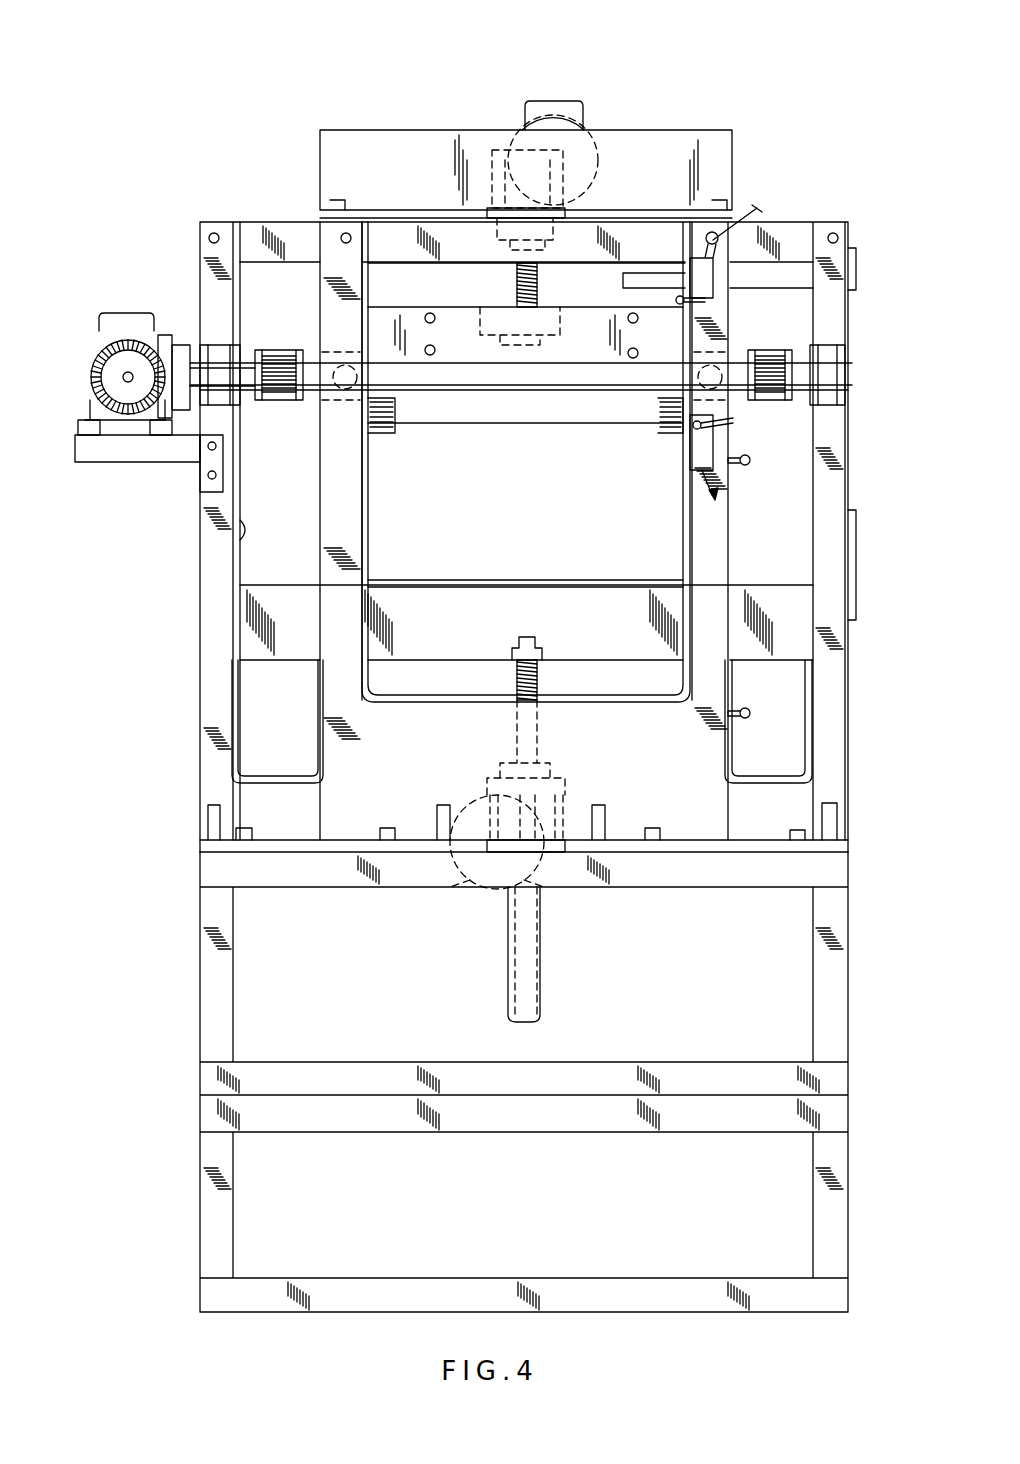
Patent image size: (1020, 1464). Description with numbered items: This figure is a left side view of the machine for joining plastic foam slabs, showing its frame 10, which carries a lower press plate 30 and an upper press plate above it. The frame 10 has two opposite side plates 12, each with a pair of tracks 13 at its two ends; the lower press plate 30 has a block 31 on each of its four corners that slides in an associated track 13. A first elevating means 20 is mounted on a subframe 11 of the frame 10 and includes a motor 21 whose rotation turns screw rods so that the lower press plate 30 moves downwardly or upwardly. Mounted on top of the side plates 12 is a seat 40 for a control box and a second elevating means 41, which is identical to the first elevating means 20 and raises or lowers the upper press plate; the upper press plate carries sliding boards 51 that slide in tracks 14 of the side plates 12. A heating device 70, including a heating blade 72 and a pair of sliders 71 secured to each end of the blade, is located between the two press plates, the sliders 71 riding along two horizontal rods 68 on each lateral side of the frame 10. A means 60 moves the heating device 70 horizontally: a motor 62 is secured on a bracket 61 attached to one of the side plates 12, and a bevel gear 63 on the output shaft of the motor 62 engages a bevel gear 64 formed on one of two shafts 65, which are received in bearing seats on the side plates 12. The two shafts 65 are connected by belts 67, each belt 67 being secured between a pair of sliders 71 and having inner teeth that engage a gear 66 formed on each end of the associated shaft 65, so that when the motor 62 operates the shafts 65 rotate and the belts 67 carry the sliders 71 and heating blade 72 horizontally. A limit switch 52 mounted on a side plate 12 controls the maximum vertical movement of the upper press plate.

The frame 10 is at (856, 998).
The subframe 11 is at (573, 878).
The side plate 12 is at (805, 800).
The track 13 is at (240, 540).
The track 14 is at (368, 282).
The first elevating means 20 is at (491, 792).
The motor 21 is at (452, 795).
The lower press plate 30 is at (607, 607).
The block 31 is at (262, 620).
The seat 40 is at (728, 160).
The second elevating means 41 is at (563, 84).
The sliding board 51 is at (462, 340).
The limit switch 52 is at (712, 272).
The means for moving the heating device 60 is at (140, 411).
The bracket 61 is at (80, 455).
The motor 62 is at (130, 322).
The bevel gear 63 is at (92, 405).
The bevel gear 64 is at (150, 410).
The shaft 65 is at (612, 368).
The gear 66 is at (290, 397).
The belt 67 is at (278, 352).
The horizontal rod 68 is at (397, 398).
The heating device 70 is at (583, 440).
The slider 71 is at (343, 402).
The heating blade 72 is at (555, 427).